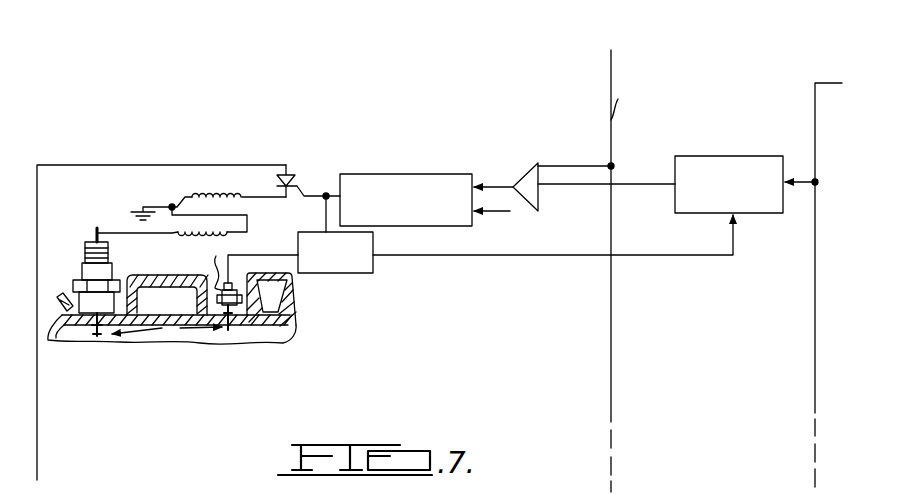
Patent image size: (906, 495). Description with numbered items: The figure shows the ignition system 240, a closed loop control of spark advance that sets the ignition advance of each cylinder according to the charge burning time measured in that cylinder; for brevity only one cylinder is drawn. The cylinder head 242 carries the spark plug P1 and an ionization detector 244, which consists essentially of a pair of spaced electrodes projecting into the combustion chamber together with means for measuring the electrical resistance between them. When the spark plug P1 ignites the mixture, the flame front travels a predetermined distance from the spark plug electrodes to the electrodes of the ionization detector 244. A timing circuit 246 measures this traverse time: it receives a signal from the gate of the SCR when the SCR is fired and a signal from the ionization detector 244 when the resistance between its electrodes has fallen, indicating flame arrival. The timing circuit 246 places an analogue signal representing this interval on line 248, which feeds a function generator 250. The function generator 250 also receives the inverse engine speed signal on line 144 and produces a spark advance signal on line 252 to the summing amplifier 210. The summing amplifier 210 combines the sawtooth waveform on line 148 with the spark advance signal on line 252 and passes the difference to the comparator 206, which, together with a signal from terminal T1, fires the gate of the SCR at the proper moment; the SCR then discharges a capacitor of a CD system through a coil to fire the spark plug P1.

The ignition system 240 is at (327, 121).
The comparator 206 is at (401, 174).
The summing amplifier 210 is at (522, 178).
The sawtooth waveform line 148 is at (611, 80).
The inverse engine speed signal line 144 is at (833, 41).
The spark advance signal line 252 is at (638, 184).
The function generator 250 is at (740, 156).
The timing circuit 246 is at (348, 273).
The timing circuit output line 248 is at (508, 257).
The ionization detector 244 is at (172, 231).
The cylinder head 242 is at (294, 329).
The spark plug P1 is at (78, 267).
The silicon controlled rectifier SCR is at (291, 193).